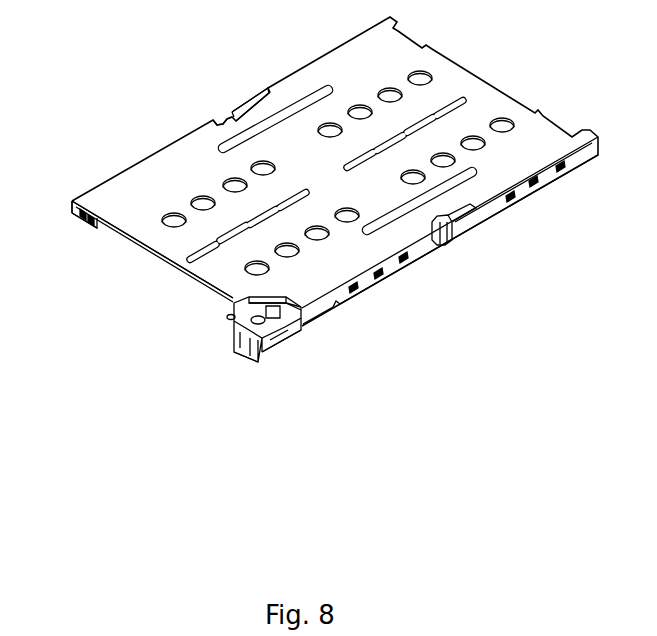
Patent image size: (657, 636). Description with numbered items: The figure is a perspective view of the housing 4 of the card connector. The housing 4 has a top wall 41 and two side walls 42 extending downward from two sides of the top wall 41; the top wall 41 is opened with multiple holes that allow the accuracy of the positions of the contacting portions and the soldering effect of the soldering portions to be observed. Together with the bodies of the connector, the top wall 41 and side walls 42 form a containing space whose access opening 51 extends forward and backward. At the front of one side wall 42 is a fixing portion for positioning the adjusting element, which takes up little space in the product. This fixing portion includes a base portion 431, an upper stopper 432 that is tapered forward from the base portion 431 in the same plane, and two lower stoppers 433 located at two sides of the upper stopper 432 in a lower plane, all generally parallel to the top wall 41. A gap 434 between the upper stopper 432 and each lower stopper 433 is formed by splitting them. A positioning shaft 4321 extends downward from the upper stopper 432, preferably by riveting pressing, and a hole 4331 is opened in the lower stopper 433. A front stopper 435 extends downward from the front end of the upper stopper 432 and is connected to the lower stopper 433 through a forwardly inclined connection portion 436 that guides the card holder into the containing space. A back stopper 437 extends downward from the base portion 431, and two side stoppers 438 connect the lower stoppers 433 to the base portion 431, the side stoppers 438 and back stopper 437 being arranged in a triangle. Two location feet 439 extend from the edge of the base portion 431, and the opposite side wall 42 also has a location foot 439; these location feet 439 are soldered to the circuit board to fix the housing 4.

The housing 4 is at (173, 152).
The top wall 41 is at (478, 90).
The side wall 42 is at (493, 207).
The location foot 439 is at (572, 170).
The access opening 51 is at (113, 228).
The side stopper 438 is at (282, 330).
The base portion 431 is at (292, 312).
The upper stopper 432 is at (262, 342).
The lower stopper 433 is at (282, 341).
The gap 434 is at (283, 338).
The front stopper 435 is at (240, 340).
The connection portion 436 is at (250, 343).
The back stopper 437 is at (277, 323).
The positioning shaft 4321 is at (235, 313).
The hole 4331 is at (232, 320).